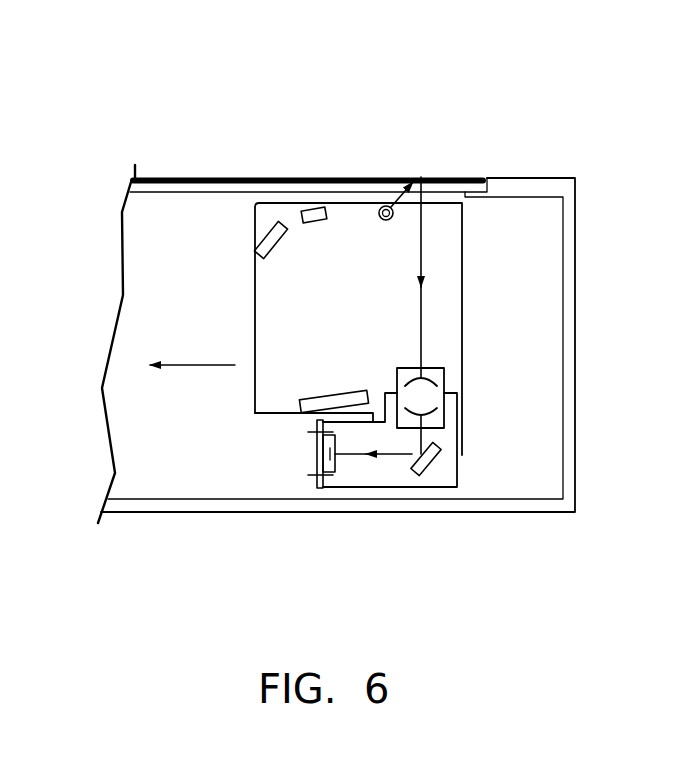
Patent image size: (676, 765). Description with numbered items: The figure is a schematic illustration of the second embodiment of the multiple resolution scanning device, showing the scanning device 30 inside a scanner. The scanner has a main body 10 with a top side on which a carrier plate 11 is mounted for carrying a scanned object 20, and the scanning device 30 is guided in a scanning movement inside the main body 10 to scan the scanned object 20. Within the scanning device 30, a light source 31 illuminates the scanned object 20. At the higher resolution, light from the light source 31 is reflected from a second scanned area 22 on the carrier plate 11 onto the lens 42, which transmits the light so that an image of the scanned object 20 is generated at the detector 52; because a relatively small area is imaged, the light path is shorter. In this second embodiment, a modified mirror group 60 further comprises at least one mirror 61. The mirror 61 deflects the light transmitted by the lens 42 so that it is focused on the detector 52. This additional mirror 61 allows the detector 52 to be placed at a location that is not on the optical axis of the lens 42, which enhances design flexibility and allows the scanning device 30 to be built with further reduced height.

The main body 10 is at (185, 503).
The carrier plate 11 is at (193, 190).
The scanned object 20 is at (277, 177).
The second scanned area 22 is at (421, 177).
The scanning device 30 is at (247, 318).
The light source 31 is at (384, 205).
The lens 42 is at (445, 378).
The detector 52 is at (330, 470).
The mirror group 60 is at (253, 243).
The mirror 61 is at (432, 462).